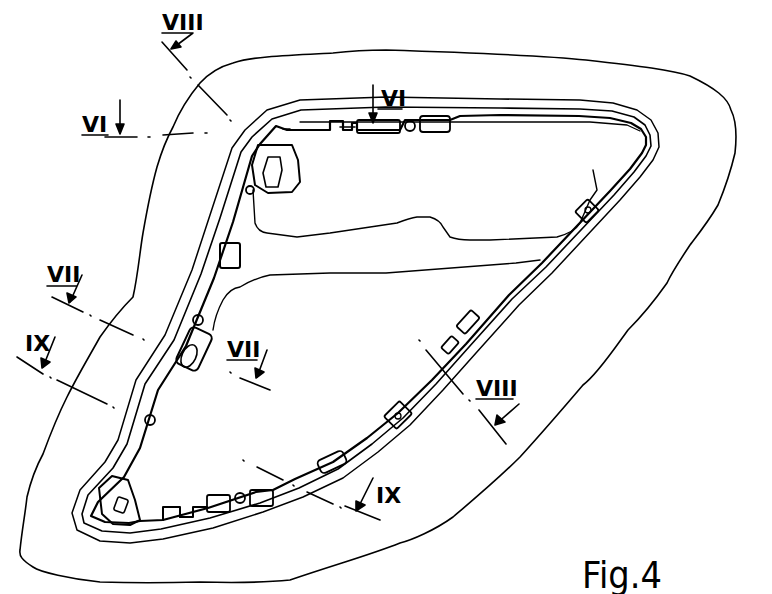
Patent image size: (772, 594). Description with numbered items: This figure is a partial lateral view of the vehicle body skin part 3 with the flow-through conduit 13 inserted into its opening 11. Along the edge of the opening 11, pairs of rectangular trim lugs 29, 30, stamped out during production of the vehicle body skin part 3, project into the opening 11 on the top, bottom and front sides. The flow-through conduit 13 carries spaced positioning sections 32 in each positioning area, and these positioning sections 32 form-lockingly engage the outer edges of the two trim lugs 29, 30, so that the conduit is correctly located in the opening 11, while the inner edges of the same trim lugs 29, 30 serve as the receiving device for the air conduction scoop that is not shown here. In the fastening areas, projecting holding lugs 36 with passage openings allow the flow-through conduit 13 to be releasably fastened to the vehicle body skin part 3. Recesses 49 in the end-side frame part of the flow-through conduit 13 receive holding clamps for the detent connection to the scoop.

The vehicle body skin part 3 is at (700, 165).
The opening 11 is at (425, 199).
The flow-through conduit 13 is at (518, 247).
The trim lug 29 is at (323, 117).
The trim lug 30 is at (350, 137).
The positioning section 32 is at (290, 137).
The holding lug 36 is at (590, 200).
The recess 49 is at (188, 353).